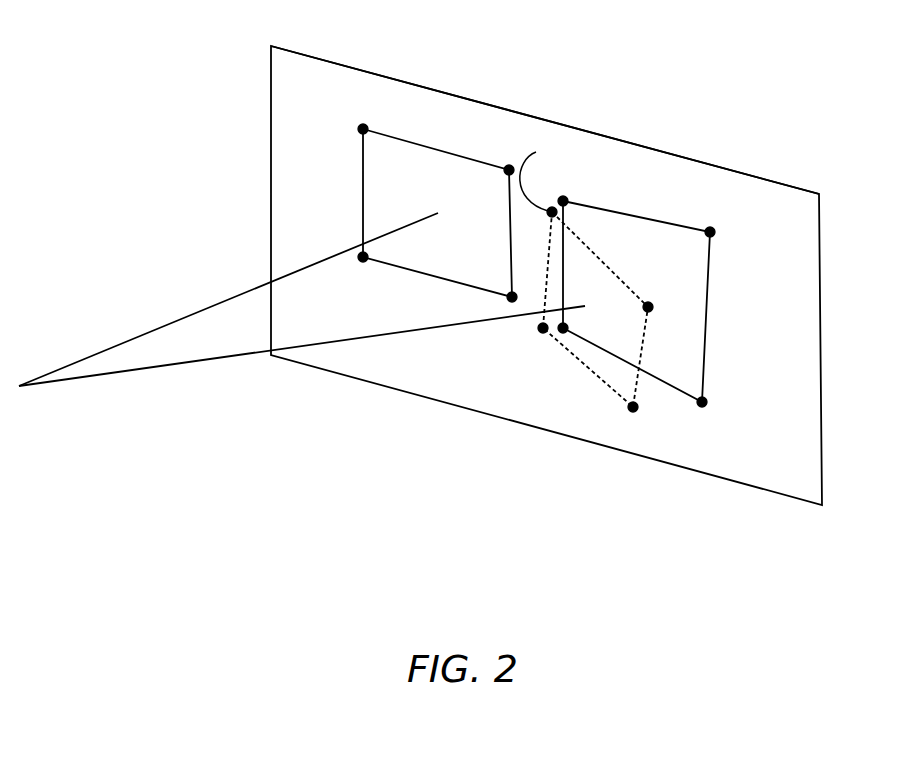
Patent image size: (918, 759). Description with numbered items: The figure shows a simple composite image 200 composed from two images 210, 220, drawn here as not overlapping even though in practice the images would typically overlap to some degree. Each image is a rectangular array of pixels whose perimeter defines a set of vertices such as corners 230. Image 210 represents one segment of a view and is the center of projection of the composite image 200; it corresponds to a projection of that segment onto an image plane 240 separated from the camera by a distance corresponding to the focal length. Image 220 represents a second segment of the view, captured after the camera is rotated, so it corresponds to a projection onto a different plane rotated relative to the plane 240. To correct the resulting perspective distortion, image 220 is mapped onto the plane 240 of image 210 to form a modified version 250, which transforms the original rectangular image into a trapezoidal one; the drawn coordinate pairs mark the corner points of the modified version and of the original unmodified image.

The composite image 200 is at (438, 383).
The image 210 is at (414, 162).
The image 220 is at (613, 378).
The corner 230 is at (363, 126).
The image plane 240 is at (543, 118).
The modified version 250 is at (647, 242).